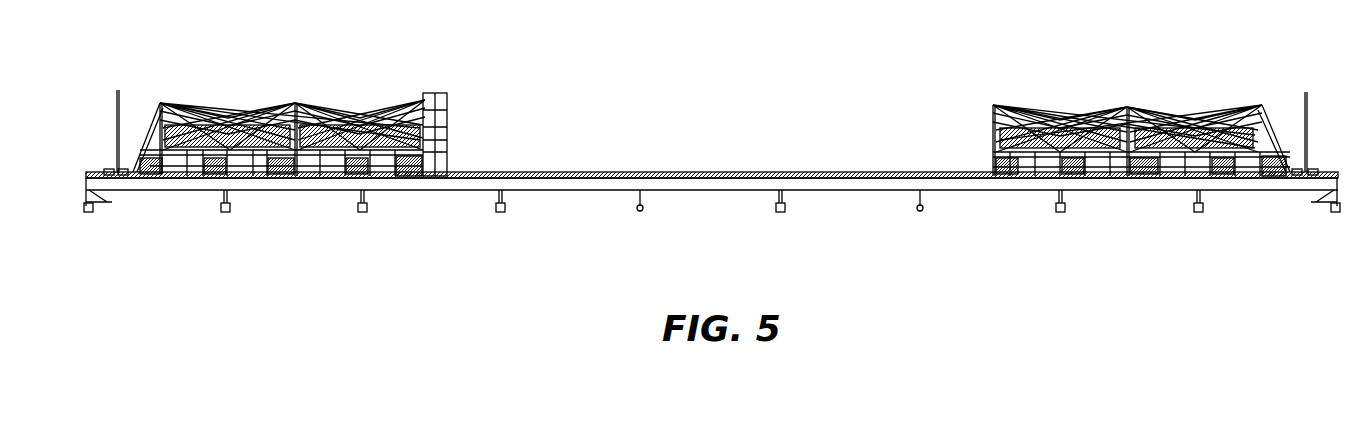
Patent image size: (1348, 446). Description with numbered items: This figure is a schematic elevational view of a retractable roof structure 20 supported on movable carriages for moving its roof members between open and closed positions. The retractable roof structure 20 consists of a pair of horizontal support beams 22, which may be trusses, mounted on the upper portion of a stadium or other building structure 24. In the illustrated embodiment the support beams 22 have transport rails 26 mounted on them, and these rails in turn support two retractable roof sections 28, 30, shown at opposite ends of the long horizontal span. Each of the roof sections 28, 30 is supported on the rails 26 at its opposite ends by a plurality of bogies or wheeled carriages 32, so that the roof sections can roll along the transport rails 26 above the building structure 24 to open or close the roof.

The retractable roof structure 20 is at (924, 105).
The horizontal support beams 22 is at (870, 177).
The building structure 24 is at (640, 212).
The transport rails 26 is at (737, 172).
The retractable roof section 28 is at (334, 103).
The retractable roof section 30 is at (1152, 107).
The bogies or wheeled carriages 32 is at (165, 182).